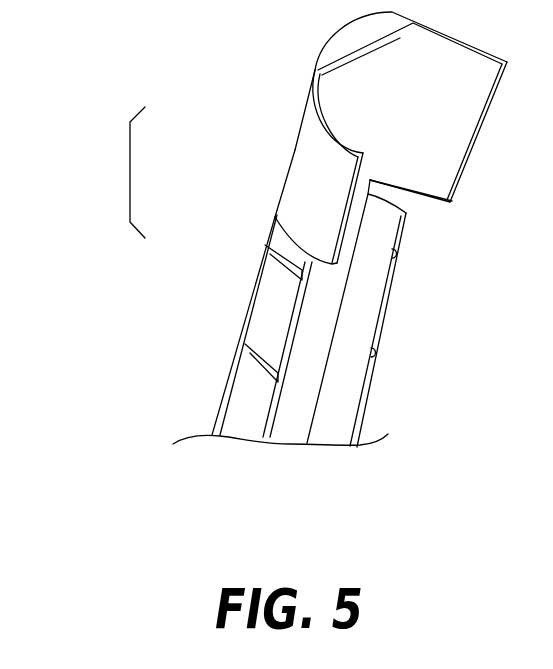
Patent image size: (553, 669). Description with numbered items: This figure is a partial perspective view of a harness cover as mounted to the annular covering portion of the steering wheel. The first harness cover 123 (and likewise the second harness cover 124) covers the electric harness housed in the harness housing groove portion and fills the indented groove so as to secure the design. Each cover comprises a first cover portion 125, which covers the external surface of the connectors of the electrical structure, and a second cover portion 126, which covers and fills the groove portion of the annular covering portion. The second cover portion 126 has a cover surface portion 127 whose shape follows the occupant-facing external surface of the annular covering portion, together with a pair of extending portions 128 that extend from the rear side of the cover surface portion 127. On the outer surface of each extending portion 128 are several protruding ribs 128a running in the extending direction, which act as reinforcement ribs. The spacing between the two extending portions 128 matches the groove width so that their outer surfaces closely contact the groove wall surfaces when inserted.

The first harness cover 123 is at (130, 172).
The second harness cover 124 is at (52, 187).
The first cover portion 125 is at (296, 125).
The second cover portion 126 is at (262, 236).
The cover surface portion 127 is at (307, 363).
The extending portion 128 is at (267, 318).
The protruding rib 128a is at (268, 263).